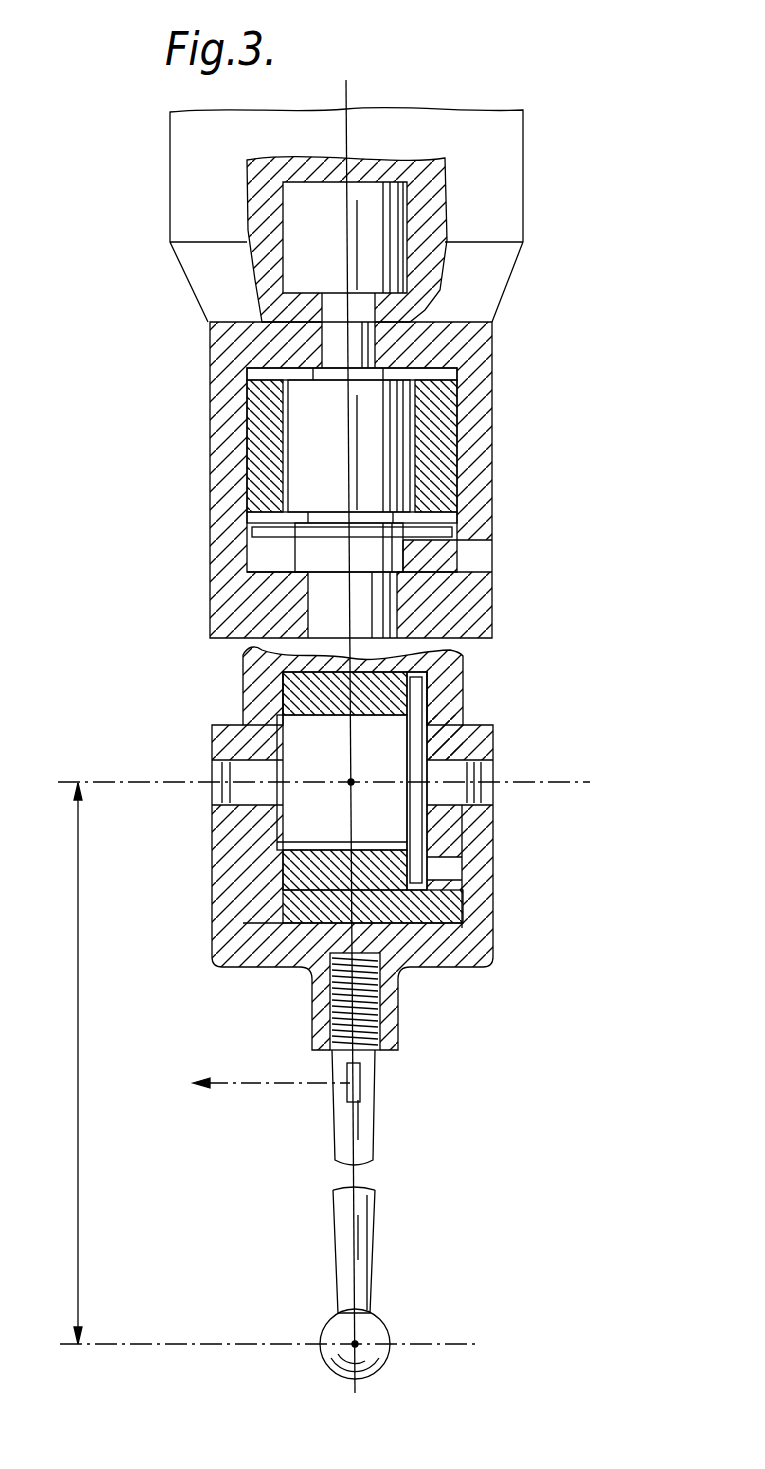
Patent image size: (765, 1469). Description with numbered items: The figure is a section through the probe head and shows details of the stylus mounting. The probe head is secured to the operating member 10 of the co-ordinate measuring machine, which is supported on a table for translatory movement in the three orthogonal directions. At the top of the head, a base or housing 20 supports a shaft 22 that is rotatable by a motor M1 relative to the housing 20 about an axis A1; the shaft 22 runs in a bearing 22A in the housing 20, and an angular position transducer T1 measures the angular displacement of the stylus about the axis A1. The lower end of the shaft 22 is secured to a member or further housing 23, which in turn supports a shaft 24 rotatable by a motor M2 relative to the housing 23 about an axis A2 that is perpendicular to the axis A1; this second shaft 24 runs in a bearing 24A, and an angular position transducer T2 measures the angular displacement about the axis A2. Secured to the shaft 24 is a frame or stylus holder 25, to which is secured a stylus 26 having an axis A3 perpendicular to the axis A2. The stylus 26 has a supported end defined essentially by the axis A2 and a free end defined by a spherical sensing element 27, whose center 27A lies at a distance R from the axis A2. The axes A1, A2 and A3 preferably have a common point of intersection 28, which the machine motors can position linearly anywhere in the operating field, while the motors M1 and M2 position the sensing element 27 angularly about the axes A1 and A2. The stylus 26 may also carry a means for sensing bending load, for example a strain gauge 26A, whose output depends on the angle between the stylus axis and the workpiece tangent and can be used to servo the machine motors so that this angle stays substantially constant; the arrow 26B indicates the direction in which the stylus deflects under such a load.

The operating member 10 is at (507, 178).
The base or housing 20 is at (478, 370).
The motor M1 is at (300, 440).
The angular position transducer T1 is at (267, 538).
The shaft 22 is at (377, 590).
The bearing 22A is at (288, 607).
The member or further housing 23 is at (450, 670).
The angular position transducer T2 is at (413, 705).
The shaft 24 is at (440, 802).
The bearing 24A is at (440, 755).
The axis A2 is at (575, 782).
The motor M2 is at (293, 737).
The common point of intersection 28 is at (350, 784).
The frame or stylus holder 25 is at (487, 942).
The stylus 26 is at (363, 1143).
The strain gauge 26A is at (358, 1088).
The stylus deflection direction 26B is at (252, 1082).
The axis A3 is at (352, 1242).
The spherical sensing element 27 is at (372, 1327).
The probe ball center 27A is at (358, 1348).
The radius from second axis to ball center R is at (267, 1063).
The axis A1 is at (346, 92).